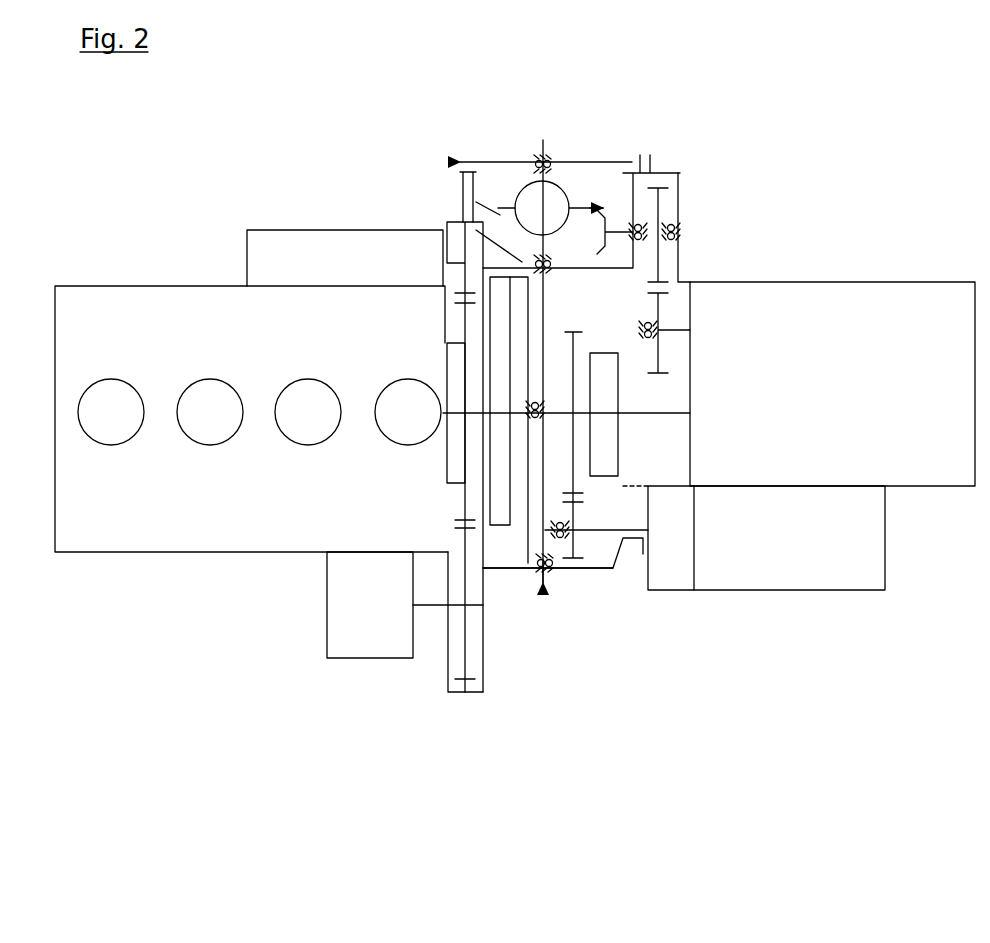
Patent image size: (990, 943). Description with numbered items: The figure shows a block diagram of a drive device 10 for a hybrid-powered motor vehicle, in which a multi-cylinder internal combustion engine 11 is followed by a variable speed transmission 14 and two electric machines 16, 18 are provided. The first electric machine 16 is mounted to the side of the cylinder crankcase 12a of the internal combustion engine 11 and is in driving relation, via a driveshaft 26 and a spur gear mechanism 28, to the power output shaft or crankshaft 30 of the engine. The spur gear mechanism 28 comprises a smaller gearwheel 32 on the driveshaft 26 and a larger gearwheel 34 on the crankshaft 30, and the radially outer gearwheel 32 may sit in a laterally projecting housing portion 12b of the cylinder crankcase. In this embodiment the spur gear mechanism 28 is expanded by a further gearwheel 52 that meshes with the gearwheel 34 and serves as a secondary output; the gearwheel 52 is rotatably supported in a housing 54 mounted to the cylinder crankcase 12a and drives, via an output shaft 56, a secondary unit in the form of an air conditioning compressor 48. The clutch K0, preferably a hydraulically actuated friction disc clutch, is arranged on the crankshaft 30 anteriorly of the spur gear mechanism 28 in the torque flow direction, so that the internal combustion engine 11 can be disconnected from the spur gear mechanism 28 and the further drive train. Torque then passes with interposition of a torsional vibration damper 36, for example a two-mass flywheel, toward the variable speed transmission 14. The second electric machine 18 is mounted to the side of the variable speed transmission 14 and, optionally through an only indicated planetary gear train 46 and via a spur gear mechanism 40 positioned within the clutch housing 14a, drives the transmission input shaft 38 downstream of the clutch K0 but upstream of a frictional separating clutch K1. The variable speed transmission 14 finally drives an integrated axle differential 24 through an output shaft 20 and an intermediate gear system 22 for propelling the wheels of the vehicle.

The drive device 10 is at (805, 162).
The internal combustion engine 11 is at (166, 516).
The cylinder crankcase 12a is at (122, 285).
The housing portion 12b is at (450, 220).
The variable speed transmission 14 is at (914, 356).
The clutch housing 14a is at (600, 570).
The electric machine 16 is at (315, 226).
The second electric machine 18 is at (798, 594).
The output shaft 20 is at (667, 330).
The intermediate gear system 22 is at (665, 207).
The integrated axle differential 24 is at (583, 137).
The driveshaft 26 is at (445, 233).
The spur gear mechanism 28 is at (478, 297).
The crankshaft 30 is at (445, 410).
The smaller gearwheel 32 is at (498, 208).
The larger gearwheel 34 is at (457, 502).
The torsional vibration damper 36 is at (500, 530).
The transmission input shaft 38 is at (668, 412).
The spur gear mechanism 40 is at (592, 499).
The planetary gear train 46 is at (673, 592).
The air conditioning compressor 48 is at (389, 616).
The further gearwheel 52 is at (468, 687).
The housing 54 is at (483, 643).
The output shaft 56 is at (433, 607).
The clutch K0 is at (447, 462).
The frictional separating clutch K1 is at (622, 397).